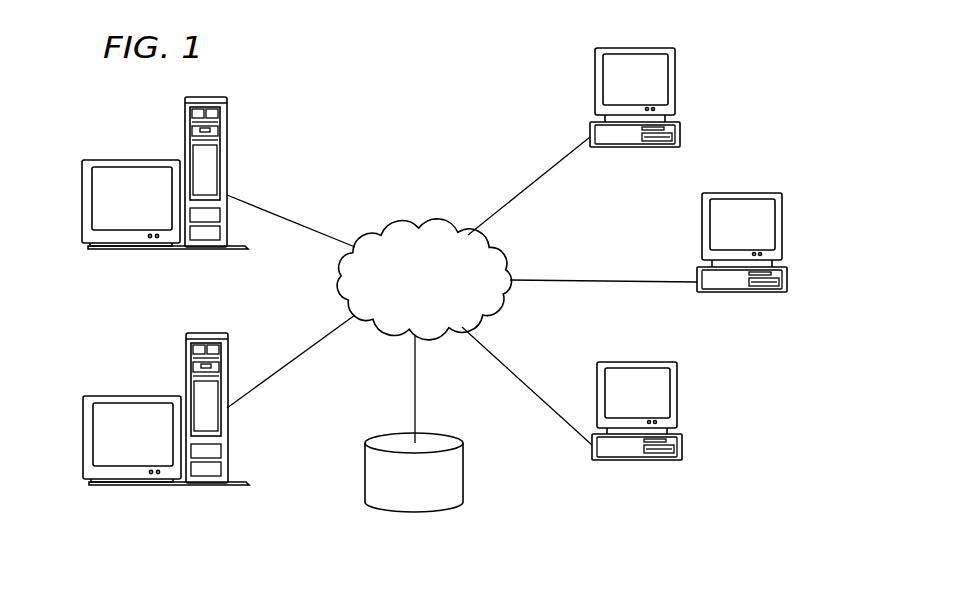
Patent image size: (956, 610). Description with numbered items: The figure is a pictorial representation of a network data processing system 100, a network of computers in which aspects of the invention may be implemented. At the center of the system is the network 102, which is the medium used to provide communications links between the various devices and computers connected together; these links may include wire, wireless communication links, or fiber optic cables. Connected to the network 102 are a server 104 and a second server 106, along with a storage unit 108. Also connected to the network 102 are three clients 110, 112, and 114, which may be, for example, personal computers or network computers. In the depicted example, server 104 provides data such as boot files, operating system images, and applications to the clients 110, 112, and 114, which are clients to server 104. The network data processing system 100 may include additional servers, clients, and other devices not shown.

The network data processing system 100 is at (309, 92).
The network 102 is at (442, 308).
The server 104 is at (185, 116).
The server 106 is at (83, 439).
The storage unit 108 is at (365, 473).
The client 110 is at (675, 87).
The client 112 is at (780, 232).
The client 114 is at (677, 398).